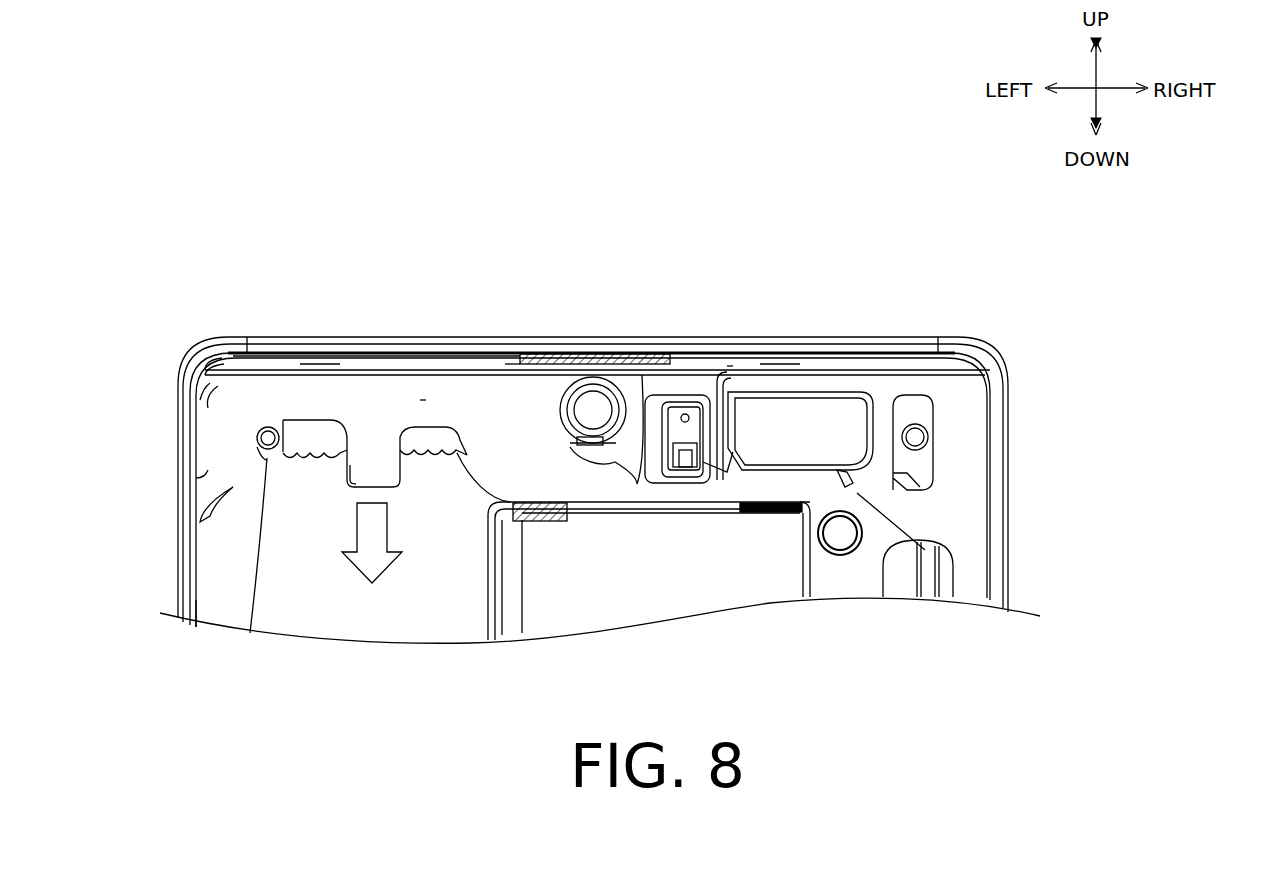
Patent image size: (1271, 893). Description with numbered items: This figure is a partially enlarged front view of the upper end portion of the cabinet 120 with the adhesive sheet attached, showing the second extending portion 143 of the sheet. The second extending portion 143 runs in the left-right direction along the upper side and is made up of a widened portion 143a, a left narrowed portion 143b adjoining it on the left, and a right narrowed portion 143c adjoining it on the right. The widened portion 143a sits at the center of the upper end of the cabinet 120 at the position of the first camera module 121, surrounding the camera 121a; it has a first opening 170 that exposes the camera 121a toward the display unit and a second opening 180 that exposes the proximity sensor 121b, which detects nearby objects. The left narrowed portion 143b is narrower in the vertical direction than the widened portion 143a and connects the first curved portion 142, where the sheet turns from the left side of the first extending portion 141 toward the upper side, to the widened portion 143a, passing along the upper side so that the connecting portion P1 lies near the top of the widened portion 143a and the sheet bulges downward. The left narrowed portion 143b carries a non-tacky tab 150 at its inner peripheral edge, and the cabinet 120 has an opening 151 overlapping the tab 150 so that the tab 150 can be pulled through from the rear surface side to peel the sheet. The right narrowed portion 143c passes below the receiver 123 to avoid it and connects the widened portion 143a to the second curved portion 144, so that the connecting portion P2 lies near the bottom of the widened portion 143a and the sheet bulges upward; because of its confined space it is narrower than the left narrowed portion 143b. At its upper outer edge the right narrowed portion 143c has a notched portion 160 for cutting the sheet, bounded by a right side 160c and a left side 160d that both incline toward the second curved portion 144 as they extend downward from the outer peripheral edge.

The cabinet 120 is at (186, 210).
The first camera module 121 is at (645, 380).
The camera 121a is at (597, 407).
The proximity sensor 121b is at (687, 412).
The receiver 123 is at (825, 427).
The first extending portion 141 is at (196, 583).
The first curved portion 142 is at (203, 405).
The second extending portion 143 is at (570, 372).
The widened portion 143a is at (525, 397).
The left narrowed portion 143b is at (327, 397).
The right narrowed portion 143c is at (790, 487).
The second curved portion 144 is at (985, 408).
The tab 150 is at (360, 431).
The opening 151 is at (348, 465).
The notched portion 160 is at (186, 507).
The right side 160c is at (877, 435).
The left side 160d is at (837, 478).
The first opening 170 is at (603, 453).
The second opening 180 is at (700, 484).
The connecting portion P1 is at (423, 396).
The connecting portion P2 is at (730, 365).